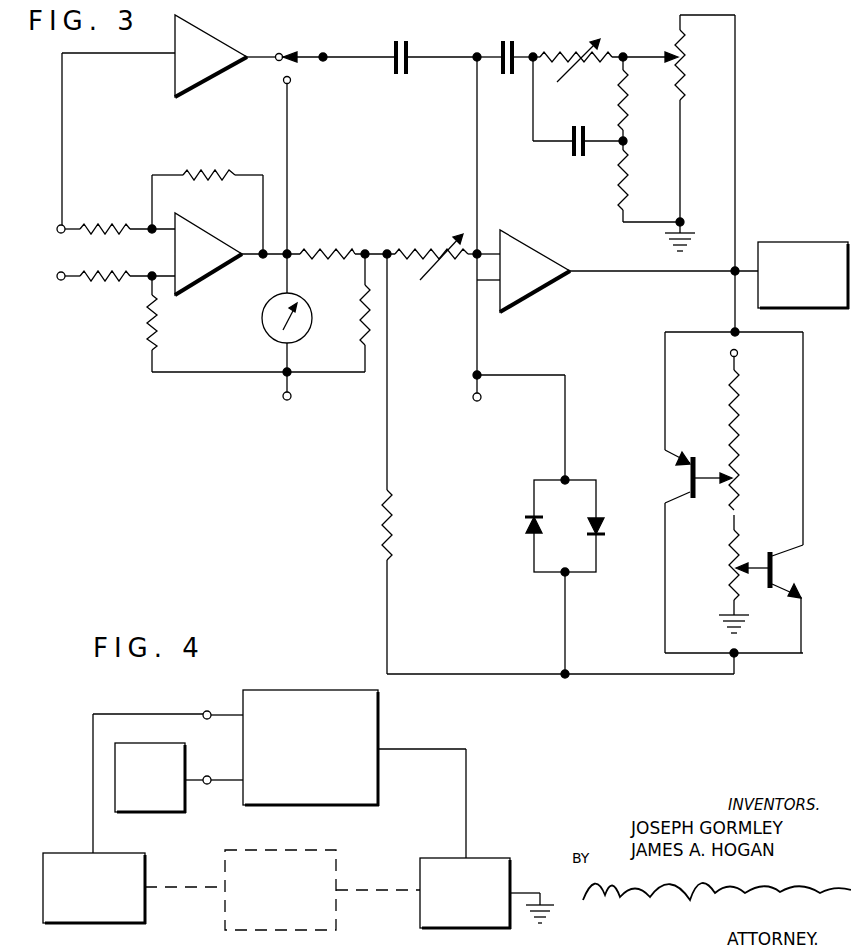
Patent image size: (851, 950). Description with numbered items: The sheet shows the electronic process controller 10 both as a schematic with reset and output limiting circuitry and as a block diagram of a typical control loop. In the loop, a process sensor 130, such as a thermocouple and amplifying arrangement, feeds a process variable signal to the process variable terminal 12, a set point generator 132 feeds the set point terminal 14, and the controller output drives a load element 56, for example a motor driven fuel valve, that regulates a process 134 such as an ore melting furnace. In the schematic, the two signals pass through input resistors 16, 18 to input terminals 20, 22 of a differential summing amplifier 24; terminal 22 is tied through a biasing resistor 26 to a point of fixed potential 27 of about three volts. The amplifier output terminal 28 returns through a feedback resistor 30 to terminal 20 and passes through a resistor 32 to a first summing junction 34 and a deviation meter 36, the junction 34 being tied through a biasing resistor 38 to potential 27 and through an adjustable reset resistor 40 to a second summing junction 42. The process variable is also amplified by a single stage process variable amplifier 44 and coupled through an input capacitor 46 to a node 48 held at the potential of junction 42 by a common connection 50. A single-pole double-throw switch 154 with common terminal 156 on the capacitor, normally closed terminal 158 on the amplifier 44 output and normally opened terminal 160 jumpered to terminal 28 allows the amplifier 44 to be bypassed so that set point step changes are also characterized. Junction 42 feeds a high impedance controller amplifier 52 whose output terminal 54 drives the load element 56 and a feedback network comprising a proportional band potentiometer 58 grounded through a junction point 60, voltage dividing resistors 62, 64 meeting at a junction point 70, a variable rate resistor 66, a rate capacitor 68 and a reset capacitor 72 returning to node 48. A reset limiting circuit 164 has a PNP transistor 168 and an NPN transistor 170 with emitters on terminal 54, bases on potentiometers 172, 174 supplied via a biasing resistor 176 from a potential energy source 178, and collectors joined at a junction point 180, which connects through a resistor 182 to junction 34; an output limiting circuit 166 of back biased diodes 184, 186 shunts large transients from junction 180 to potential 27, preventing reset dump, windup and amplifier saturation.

In FIG. 3, the electronic process controller 10 is at (55, 134).
In FIG. 4, the electronic process controller 10 is at (290, 700).
In FIG. 3, the input terminal 12 is at (62, 235).
In FIG. 4, the input terminal 12 is at (210, 719).
In FIG. 3, the input terminal 14 is at (62, 282).
In FIG. 4, the input terminal 14 is at (210, 784).
In FIG. 3, the input resistor 16 is at (109, 224).
In FIG. 3, the input resistor 18 is at (108, 282).
In FIG. 3, the input terminal 20 is at (151, 225).
In FIG. 3, the input terminal 22 is at (152, 272).
In FIG. 3, the differential summing amplifier 24 is at (200, 238).
In FIG. 3, the biasing resistor 26 is at (160, 322).
In FIG. 3, the point of fixed potential 27 is at (289, 401).
In FIG. 3, the output terminal 28 is at (263, 260).
In FIG. 3, the feedback resistor 30 is at (216, 170).
In FIG. 3, the resistor 32 is at (329, 250).
In FIG. 3, the first summing junction 34 is at (365, 250).
In FIG. 3, the deviation meter 36 is at (263, 316).
In FIG. 3, the biasing resistor 38 is at (360, 312).
In FIG. 3, the adjustable reset resistor 40 is at (428, 250).
In FIG. 3, the second summing junction 42 is at (475, 263).
In FIG. 3, the single stage process variable amplifier 44 is at (206, 44).
In FIG. 3, the input capacitor 46 is at (402, 76).
In FIG. 3, the node 48 is at (477, 53).
In FIG. 3, the common connection 50 is at (477, 148).
In FIG. 3, the high impedance controller amplifier 52 is at (525, 248).
In FIG. 3, the output terminal 54 is at (733, 278).
In FIG. 3, the load element 56 is at (805, 245).
In FIG. 4, the load element 56 is at (490, 862).
In FIG. 3, the adjustable proportional band potentiometer 58 is at (686, 66).
In FIG. 3, the junction point 60 is at (686, 220).
In FIG. 3, the voltage dividing resistor 62 is at (619, 182).
In FIG. 3, the voltage dividing resistor 64 is at (619, 98).
In FIG. 3, the variable rate resistor 66 is at (574, 56).
In FIG. 3, the rate capacitor 68 is at (577, 159).
In FIG. 3, the junction point 70 is at (630, 141).
In FIG. 3, the reset capacitor 72 is at (508, 76).
In FIG. 4, the process sensor 130 is at (70, 857).
In FIG. 4, the set point generator 132 is at (148, 748).
In FIG. 4, the process 134 is at (290, 851).
In FIG. 3, the single-pole double-throw switch 154 is at (300, 58).
In FIG. 3, the common terminal 156 is at (324, 53).
In FIG. 3, the normally closed terminal 158 is at (279, 53).
In FIG. 3, the normally opened terminal 160 is at (284, 83).
In FIG. 3, the reset limiting circuit 164 is at (790, 393).
In FIG. 3, the output limiting circuit 166 is at (584, 511).
In FIG. 3, the PNP transistor 168 is at (690, 479).
In FIG. 3, the NPN transistor 170 is at (776, 568).
In FIG. 3, the adjustable potentiometer 172 is at (740, 482).
In FIG. 3, the second adjustable potentiometer 174 is at (730, 568).
In FIG. 3, the biasing resistor 176 is at (729, 400).
In FIG. 3, the potential energy source 178 is at (729, 353).
In FIG. 3, the junction point 180 is at (738, 658).
In FIG. 3, the resistor 182 is at (392, 526).
In FIG. 3, the first diode 184 is at (526, 525).
In FIG. 3, the second diode 186 is at (604, 527).